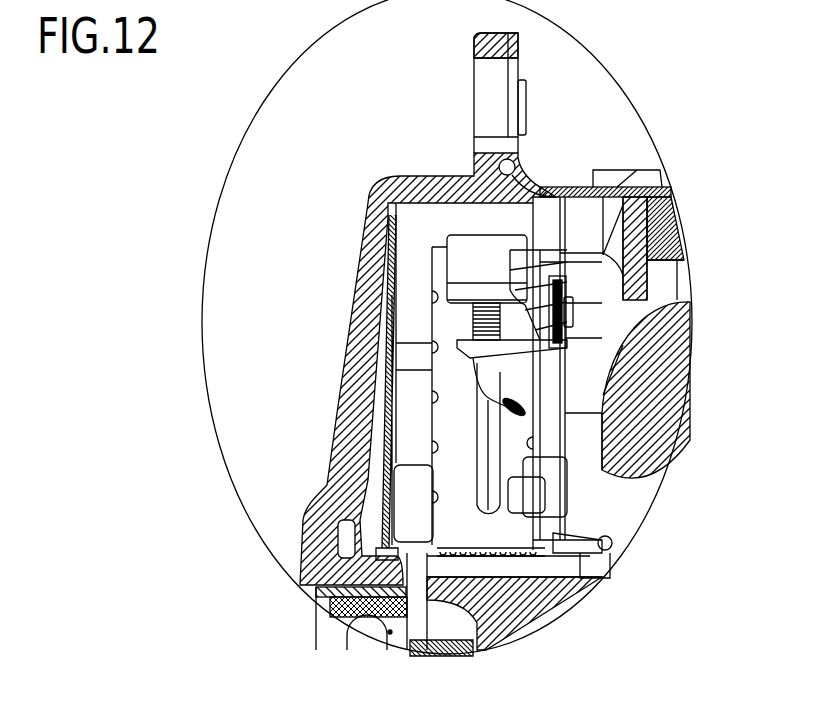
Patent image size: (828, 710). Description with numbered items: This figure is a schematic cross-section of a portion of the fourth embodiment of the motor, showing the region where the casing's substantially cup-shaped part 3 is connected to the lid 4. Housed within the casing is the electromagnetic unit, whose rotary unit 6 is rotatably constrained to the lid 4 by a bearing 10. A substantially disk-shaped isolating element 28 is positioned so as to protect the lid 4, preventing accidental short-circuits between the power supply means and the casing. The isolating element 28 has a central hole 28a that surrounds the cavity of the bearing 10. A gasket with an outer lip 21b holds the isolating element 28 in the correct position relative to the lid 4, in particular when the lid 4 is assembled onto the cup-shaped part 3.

The cup-shaped part 3 is at (553, 170).
The lid 4 is at (372, 282).
The rotary unit 6 is at (663, 388).
The bearing 10 is at (365, 620).
The outer lip 21b is at (418, 560).
The isolating element 28 is at (405, 246).
The central hole 28a is at (381, 562).